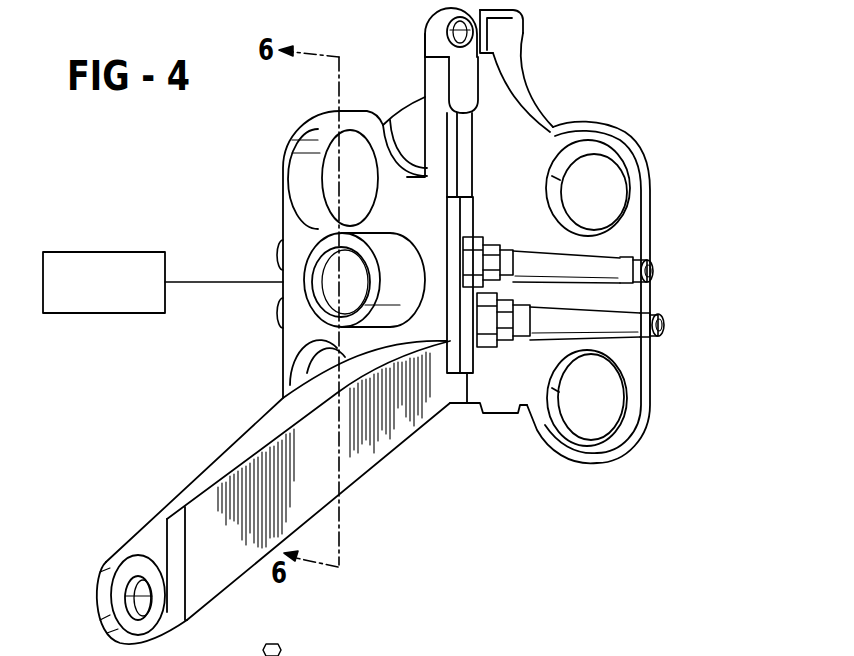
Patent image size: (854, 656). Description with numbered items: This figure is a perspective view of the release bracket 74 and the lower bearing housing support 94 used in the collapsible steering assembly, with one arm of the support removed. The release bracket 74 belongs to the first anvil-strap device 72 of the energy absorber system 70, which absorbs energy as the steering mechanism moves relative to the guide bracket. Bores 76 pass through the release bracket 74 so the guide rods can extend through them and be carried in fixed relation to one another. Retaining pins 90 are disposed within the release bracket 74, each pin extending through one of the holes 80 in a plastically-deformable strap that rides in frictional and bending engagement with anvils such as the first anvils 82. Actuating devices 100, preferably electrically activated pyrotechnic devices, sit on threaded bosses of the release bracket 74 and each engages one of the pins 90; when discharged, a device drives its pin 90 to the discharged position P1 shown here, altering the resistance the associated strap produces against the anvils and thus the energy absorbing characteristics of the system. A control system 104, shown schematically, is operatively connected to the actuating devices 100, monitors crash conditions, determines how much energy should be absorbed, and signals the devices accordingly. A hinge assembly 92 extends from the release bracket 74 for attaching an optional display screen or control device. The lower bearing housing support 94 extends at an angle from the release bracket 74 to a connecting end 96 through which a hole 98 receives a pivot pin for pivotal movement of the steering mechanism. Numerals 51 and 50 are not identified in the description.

The energy absorber system 70 is at (620, 66).
The release bracket 74 is at (648, 200).
The bores 76 is at (566, 162).
The retaining pins 90 is at (650, 272).
The hinge assembly 92 is at (470, 46).
The lower bearing housing support 94 is at (310, 510).
The connecting end 96 is at (107, 604).
The hole 98 is at (145, 588).
The actuating devices 100 is at (302, 270).
The control system 104 is at (112, 252).
The discharged position P1 is at (660, 324).
The holes 80 is at (277, 654).
The first anvil-strap device 72 is at (382, 655).
The first anvils 82 is at (458, 655).
The valve body 51 is at (487, 654).
The valve assembly 50 is at (547, 654).